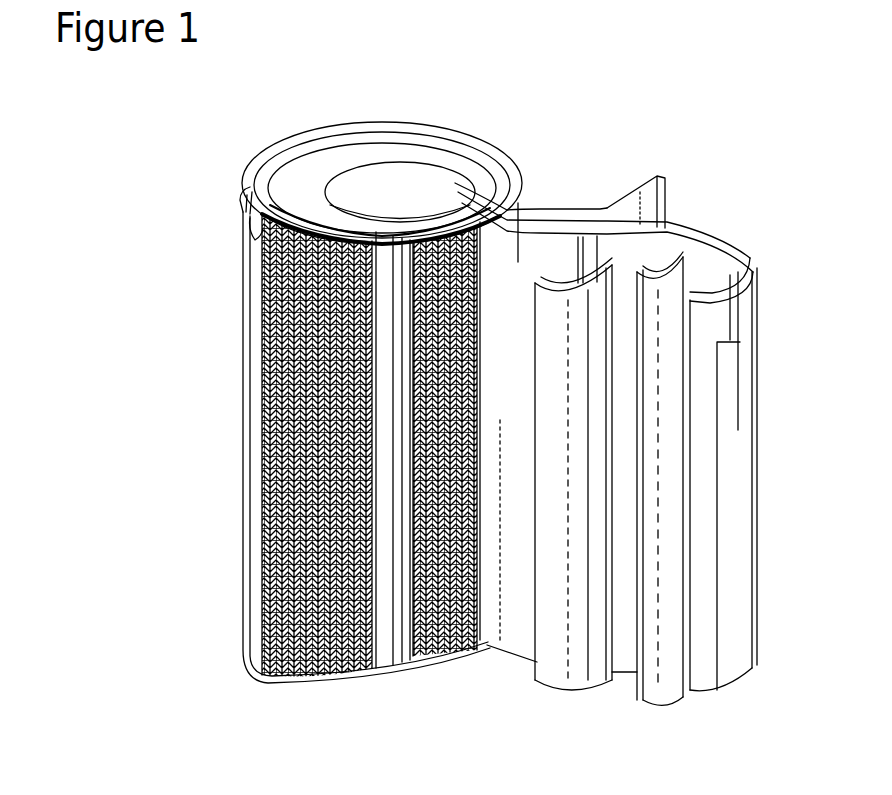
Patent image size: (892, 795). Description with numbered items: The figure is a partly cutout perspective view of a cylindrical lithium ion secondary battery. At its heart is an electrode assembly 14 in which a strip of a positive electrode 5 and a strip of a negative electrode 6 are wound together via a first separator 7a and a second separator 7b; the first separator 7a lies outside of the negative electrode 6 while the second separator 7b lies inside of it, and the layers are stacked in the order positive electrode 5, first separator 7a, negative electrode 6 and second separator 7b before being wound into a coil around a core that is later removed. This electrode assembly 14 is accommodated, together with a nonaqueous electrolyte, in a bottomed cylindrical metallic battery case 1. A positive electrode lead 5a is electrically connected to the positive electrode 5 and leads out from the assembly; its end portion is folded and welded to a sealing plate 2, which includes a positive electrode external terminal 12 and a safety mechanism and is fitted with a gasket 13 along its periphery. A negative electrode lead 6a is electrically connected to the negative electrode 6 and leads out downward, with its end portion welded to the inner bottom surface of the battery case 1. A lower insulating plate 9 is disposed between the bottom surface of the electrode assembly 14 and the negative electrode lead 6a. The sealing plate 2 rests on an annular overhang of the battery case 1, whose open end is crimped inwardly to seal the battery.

The battery case 1 is at (247, 480).
The sealing plate 2 is at (478, 150).
The positive electrode external terminal 12 is at (360, 172).
The gasket 13 is at (247, 185).
The positive electrode lead 5a is at (263, 233).
The lower insulating plate 9 is at (373, 672).
The electrode assembly 14 is at (748, 240).
The first separator 7a is at (626, 193).
The positive electrode 5 is at (598, 590).
The second separator 7b is at (668, 472).
The negative electrode 6 is at (733, 315).
The negative electrode lead 6a is at (730, 378).